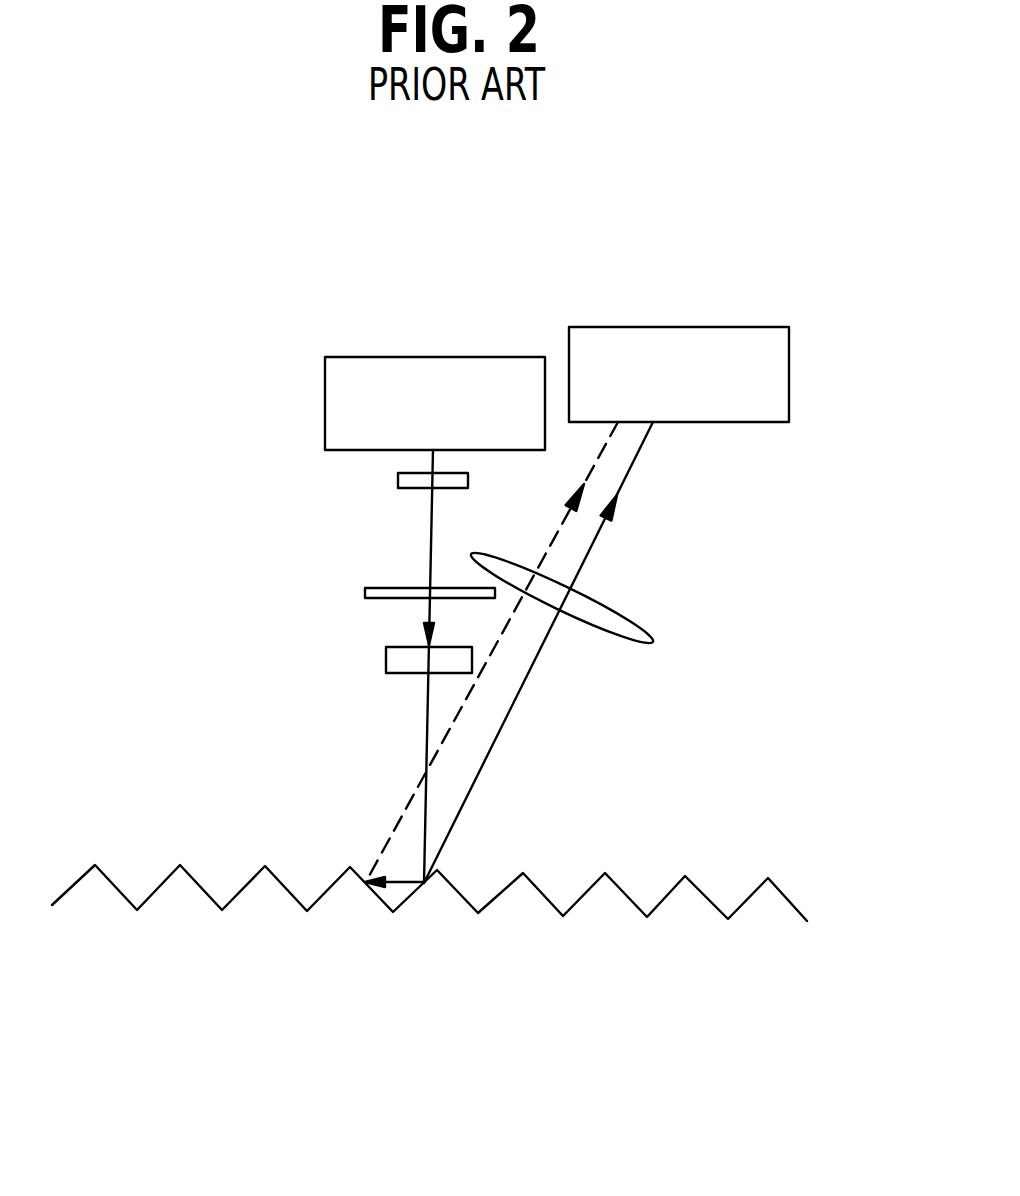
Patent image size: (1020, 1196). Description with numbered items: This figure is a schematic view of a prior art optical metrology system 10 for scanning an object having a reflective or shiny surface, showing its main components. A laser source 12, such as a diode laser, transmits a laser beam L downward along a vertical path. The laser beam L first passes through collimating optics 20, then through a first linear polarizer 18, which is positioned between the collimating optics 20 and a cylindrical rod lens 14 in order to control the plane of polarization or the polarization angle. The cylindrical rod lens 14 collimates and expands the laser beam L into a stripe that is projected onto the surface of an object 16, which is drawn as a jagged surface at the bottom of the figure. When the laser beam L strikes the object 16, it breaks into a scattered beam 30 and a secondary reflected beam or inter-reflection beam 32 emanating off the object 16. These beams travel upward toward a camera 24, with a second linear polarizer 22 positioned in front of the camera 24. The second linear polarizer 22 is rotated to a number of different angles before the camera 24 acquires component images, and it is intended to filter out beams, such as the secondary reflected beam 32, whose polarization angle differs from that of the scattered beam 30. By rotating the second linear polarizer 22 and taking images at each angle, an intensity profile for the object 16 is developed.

The optical metrology system 10 is at (225, 298).
The laser source 12 is at (340, 407).
The cylindrical rod lens 14 is at (386, 660).
The object 16 is at (426, 916).
The first linear polarizer 18 is at (365, 592).
The collimating optics 20 is at (396, 480).
The second linear polarizer 22 is at (643, 632).
The camera 24 is at (772, 380).
The scattered beam 30 is at (500, 728).
The secondary reflected beam 32 is at (400, 808).
The laser beam L is at (431, 530).